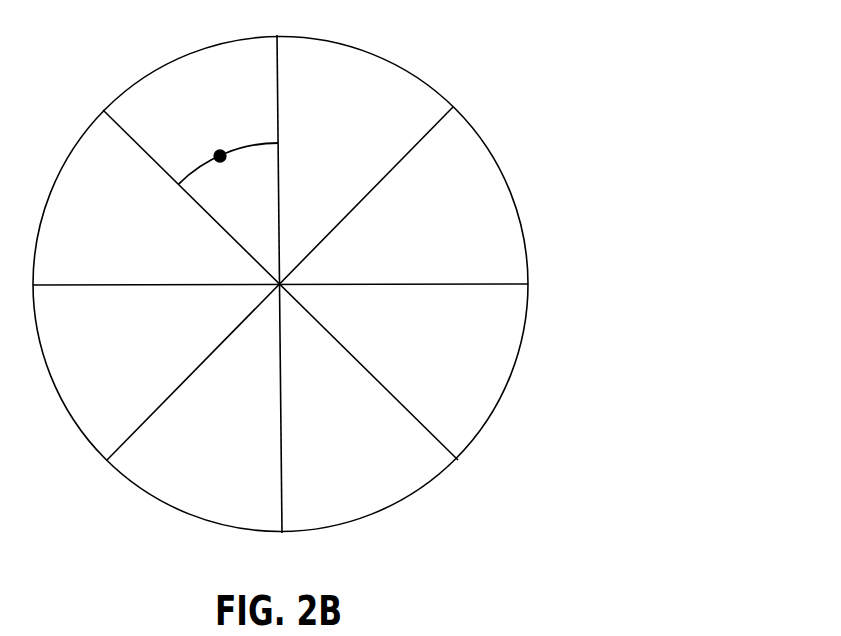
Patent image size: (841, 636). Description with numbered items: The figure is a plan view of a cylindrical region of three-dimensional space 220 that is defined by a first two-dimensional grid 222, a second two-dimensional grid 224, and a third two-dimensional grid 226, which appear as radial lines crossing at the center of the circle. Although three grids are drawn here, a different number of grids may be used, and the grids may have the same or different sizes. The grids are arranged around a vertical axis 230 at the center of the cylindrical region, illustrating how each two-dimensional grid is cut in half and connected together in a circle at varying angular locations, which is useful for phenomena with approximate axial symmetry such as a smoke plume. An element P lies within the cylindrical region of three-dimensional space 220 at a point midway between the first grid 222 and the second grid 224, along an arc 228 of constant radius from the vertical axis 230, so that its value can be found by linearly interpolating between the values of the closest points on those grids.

The cylindrical region of 3D space 220 is at (437, 68).
The first 2D grid 222 is at (160, 167).
The second 2D grid 224 is at (278, 129).
The third 2D grid 226 is at (407, 157).
The arc 228 is at (257, 144).
The vertical axis 230 is at (280, 284).
The element P is at (228, 172).